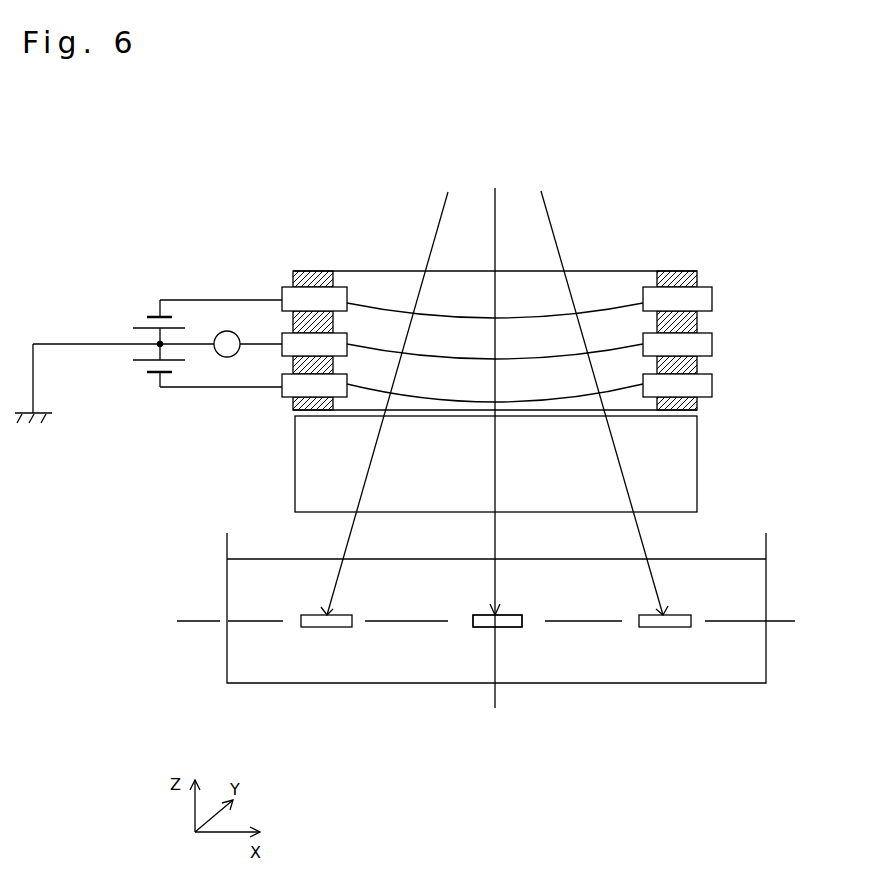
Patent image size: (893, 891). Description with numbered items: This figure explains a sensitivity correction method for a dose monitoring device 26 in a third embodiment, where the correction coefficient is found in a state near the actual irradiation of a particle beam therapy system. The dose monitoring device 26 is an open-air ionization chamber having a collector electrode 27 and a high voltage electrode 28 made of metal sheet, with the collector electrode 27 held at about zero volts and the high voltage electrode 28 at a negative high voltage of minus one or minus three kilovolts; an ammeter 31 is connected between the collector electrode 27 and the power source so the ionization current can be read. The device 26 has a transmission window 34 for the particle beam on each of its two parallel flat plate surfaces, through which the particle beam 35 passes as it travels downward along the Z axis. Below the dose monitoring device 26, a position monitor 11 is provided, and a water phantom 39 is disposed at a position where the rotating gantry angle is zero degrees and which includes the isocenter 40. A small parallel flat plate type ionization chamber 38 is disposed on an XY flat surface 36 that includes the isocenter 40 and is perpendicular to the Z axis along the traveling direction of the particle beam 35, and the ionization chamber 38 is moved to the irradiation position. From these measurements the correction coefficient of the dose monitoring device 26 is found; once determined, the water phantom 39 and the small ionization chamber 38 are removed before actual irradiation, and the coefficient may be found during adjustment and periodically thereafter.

The position monitor 11 is at (697, 455).
The dose monitoring device 26 is at (598, 208).
The collector electrode 27 is at (592, 353).
The high voltage electrode 28 is at (606, 308).
The ammeter 31 is at (227, 357).
The transmission window 34 is at (375, 271).
The charged particle beams 35 is at (547, 205).
The XY flat surface 36 is at (203, 620).
The small parallel flat plate type ionization chamber 38 is at (325, 627).
The water phantom 39 is at (227, 645).
The isocenter 40 is at (498, 620).